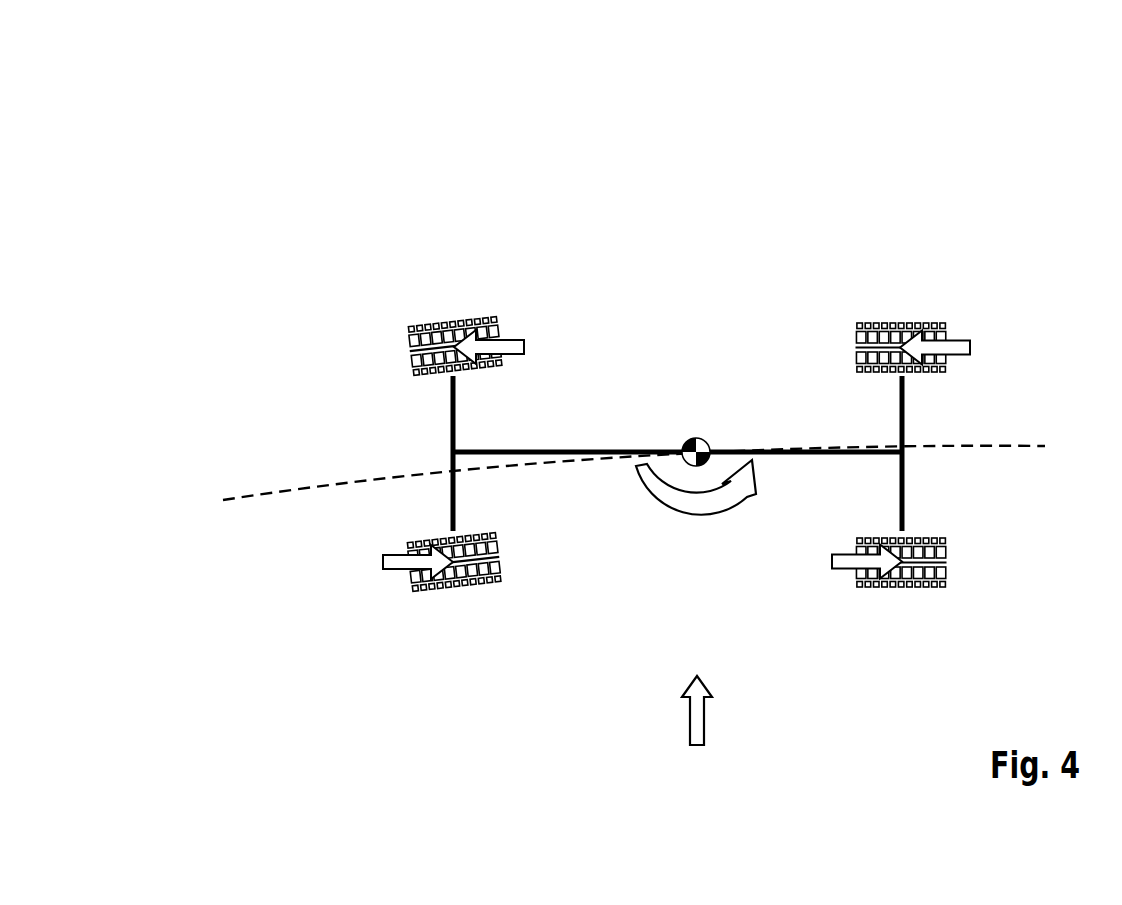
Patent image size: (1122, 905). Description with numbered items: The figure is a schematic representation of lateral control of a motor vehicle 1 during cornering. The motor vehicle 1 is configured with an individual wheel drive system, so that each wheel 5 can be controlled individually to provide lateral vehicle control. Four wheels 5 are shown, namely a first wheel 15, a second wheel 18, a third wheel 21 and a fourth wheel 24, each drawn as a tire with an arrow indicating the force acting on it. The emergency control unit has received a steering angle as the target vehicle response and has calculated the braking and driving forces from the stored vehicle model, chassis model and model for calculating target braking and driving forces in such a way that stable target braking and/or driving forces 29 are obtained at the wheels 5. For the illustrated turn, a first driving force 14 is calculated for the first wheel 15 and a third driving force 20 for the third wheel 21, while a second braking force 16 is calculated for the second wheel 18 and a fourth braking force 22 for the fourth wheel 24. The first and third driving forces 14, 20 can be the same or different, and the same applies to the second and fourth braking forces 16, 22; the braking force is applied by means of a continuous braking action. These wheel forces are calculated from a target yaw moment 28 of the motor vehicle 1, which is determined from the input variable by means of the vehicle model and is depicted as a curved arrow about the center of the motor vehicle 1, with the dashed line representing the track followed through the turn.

The motor vehicle 1 is at (871, 134).
The wheel 5 is at (671, 460).
The stable target braking and/or driving forces 29 is at (683, 460).
The first driving force 14 is at (507, 337).
The first wheel 15 is at (432, 322).
The second braking force 16 is at (390, 571).
The second wheel 18 is at (482, 585).
The third driving force 20 is at (963, 336).
The third wheel 21 is at (887, 322).
The fourth braking force 22 is at (840, 572).
The fourth wheel 24 is at (920, 588).
The target yaw moment 28 is at (653, 497).